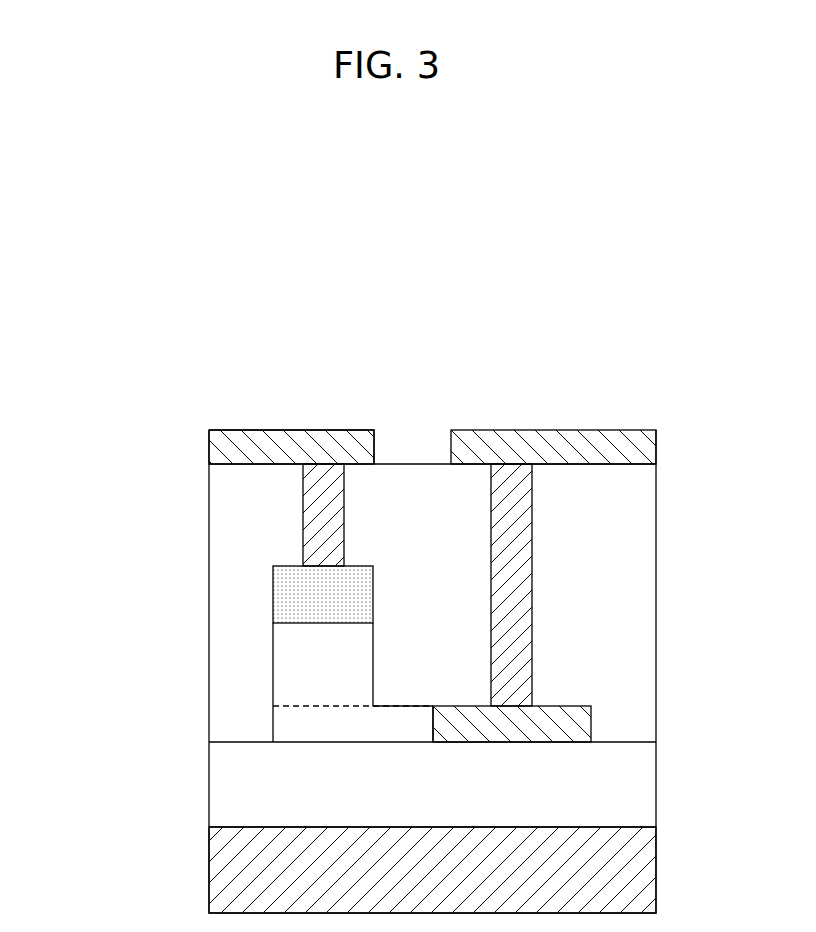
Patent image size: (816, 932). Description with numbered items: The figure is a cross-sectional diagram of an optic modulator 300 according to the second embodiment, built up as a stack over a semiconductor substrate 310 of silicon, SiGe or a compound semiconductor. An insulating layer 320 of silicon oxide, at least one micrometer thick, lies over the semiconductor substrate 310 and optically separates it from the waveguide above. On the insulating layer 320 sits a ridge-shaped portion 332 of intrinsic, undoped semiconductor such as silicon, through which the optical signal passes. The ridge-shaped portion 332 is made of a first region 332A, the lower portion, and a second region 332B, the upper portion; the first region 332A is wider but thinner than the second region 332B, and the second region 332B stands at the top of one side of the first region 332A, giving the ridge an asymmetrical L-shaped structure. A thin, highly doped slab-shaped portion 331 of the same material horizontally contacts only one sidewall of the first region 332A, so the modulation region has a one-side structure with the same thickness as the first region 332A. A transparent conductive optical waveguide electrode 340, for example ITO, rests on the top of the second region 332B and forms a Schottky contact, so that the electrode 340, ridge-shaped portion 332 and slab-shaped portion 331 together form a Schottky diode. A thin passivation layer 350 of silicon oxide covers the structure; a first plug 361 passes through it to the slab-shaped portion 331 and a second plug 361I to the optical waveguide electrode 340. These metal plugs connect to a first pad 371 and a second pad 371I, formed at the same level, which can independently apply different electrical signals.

The optic modulator 300 is at (608, 368).
The semiconductor substrate 310 is at (633, 873).
The insulating layer 320 is at (635, 787).
The slab-shaped portion 331 is at (568, 724).
The ridge-shaped portion 332 is at (248, 682).
The first region 332A is at (298, 722).
The second region 332B is at (298, 679).
The optical waveguide electrode 340 is at (300, 600).
The passivation layer 350 is at (634, 545).
The first plug 361 is at (508, 507).
The second plug 361I is at (313, 527).
The first pad 371 is at (642, 448).
The second pad 371I is at (283, 442).